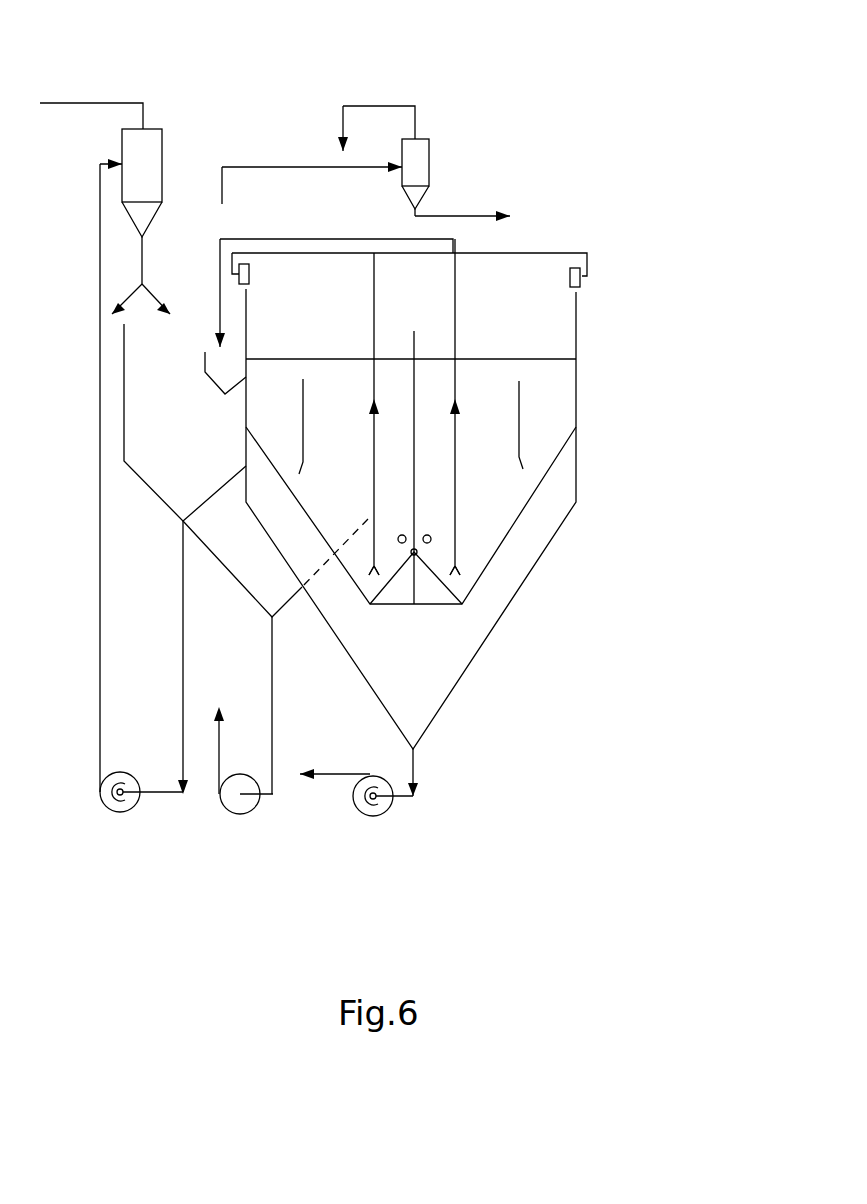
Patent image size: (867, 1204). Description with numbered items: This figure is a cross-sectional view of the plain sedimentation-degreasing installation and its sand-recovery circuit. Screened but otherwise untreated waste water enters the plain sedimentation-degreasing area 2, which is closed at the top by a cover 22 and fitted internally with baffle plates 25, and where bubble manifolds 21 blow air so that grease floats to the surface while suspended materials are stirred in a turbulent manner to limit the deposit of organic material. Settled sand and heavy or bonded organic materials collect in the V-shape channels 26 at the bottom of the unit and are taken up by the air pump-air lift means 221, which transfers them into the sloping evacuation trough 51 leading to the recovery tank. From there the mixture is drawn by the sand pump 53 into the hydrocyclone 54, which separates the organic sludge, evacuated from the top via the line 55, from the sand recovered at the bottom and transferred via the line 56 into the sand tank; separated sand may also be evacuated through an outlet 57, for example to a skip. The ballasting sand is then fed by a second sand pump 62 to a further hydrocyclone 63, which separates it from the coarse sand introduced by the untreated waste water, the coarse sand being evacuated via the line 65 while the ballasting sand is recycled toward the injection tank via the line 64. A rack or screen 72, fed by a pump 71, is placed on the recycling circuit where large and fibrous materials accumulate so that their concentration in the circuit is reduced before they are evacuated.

The plain sedimentation-degreasing area 2 is at (548, 322).
The bubble manifolds 21 is at (431, 540).
The vessel cover 22 is at (533, 254).
The baffle plates 25 is at (550, 398).
The V-shape channels 26 is at (379, 565).
The evacuation trough 51 is at (203, 383).
The sand pump 53 is at (117, 815).
The hydrocyclone 54 is at (122, 190).
The line 55 is at (97, 104).
The line 56 is at (157, 293).
The outlet 57 is at (128, 293).
The sand pump 62 is at (245, 817).
The hydrocyclone 63 is at (430, 153).
The line 64 is at (343, 120).
The line 65 is at (463, 213).
The pump 71 is at (392, 812).
The rack or screen 72 is at (337, 772).
The air pump-air lift means 221 is at (374, 480).